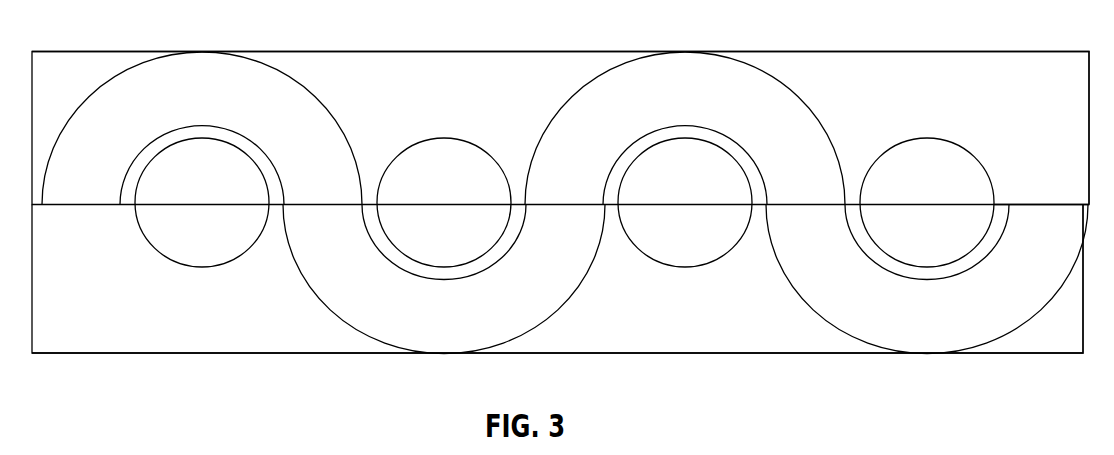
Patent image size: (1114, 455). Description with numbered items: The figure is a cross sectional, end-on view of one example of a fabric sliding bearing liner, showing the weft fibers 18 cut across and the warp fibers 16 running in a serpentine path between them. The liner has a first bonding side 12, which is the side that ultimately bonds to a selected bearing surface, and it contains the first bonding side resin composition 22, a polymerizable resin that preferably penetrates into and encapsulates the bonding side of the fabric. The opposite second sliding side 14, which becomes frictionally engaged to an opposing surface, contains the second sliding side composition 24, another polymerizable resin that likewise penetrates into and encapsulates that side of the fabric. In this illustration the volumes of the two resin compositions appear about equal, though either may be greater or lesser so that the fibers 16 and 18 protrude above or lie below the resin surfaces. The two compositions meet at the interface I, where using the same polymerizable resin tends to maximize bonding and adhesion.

The first bonding side 12 is at (64, 357).
The second sliding side 14 is at (250, 44).
The warp fibers 16 is at (680, 46).
The weft fibers 18 is at (942, 155).
The first bonding side resin composition (1BSRC) 22 is at (739, 341).
The second sliding side composition (2SSRC) 24 is at (407, 78).
The interface I is at (1002, 198).